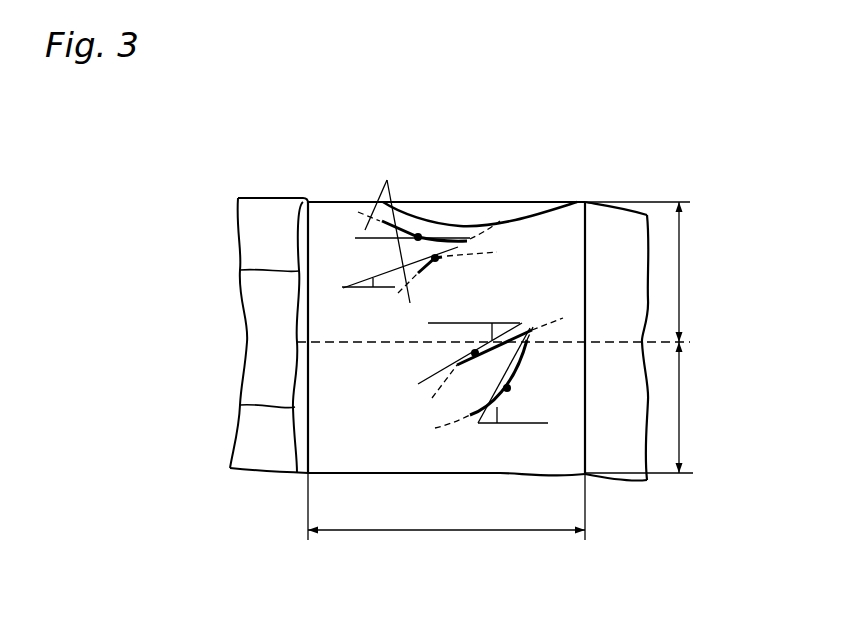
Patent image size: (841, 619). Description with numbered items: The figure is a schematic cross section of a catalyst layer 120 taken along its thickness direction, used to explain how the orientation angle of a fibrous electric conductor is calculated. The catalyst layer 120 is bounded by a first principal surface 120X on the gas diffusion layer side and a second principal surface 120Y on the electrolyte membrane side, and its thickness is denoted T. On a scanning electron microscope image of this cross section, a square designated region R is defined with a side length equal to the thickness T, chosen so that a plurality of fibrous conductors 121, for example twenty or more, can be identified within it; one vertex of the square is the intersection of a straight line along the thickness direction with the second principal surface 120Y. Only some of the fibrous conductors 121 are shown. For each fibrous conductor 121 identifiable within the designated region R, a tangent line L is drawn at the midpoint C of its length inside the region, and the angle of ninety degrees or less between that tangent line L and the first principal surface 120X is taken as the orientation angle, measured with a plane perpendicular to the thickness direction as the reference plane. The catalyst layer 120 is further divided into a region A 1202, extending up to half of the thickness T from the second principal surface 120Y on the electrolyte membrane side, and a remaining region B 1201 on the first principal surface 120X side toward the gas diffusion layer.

The catalyst layer 120 is at (615, 237).
The first principal surface 120X is at (305, 195).
The second principal surface 120Y is at (272, 482).
The region B 1201 is at (240, 270).
The region A 1202 is at (240, 405).
The fibrous conductor 121 is at (447, 263).
The designated region R is at (506, 196).
The midpoint C is at (418, 236).
The tangent line L is at (550, 368).
The thickness T is at (525, 381).